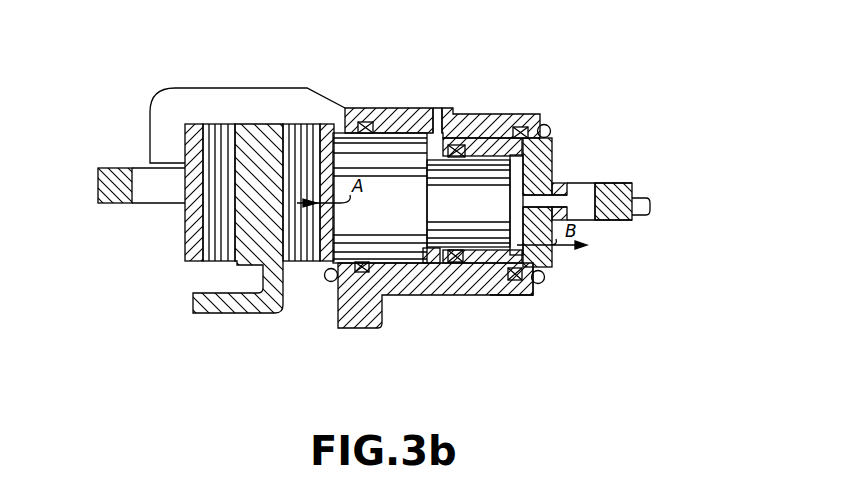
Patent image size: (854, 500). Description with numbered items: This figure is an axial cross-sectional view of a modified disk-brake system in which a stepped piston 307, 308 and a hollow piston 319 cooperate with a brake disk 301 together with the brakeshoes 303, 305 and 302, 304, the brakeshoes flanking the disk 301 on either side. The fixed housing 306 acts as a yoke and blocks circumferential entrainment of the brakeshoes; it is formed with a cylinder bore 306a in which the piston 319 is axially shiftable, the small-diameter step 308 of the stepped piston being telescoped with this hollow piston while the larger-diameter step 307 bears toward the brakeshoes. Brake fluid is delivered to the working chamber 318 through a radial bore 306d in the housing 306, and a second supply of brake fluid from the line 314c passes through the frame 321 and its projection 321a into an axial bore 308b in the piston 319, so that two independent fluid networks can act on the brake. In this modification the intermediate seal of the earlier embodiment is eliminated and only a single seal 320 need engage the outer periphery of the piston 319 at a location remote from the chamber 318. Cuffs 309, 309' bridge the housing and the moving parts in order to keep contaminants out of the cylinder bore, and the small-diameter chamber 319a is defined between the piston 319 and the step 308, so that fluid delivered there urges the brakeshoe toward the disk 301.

The disk 301 is at (272, 300).
The brakeshoe 302 is at (207, 222).
The brakeshoe 303 is at (300, 127).
The brakeshoe 304 is at (193, 248).
The brakeshoe 305 is at (328, 128).
The housing 306 is at (220, 105).
The cylinder bore 306a is at (407, 255).
The radial bore 306d is at (440, 110).
The larger-diameter step 307 is at (377, 153).
The small-diameter step 308 is at (482, 168).
The axial bore 308b is at (540, 190).
The O-ring 309 is at (310, 310).
The O-ring 309' is at (575, 207).
The line 314c is at (643, 210).
The chamber 318 is at (433, 262).
The piston 319 is at (490, 262).
The sleeve flange 319a is at (522, 168).
The housing end 320 is at (503, 292).
The frame 321 is at (97, 182).
The projection 321a is at (623, 187).